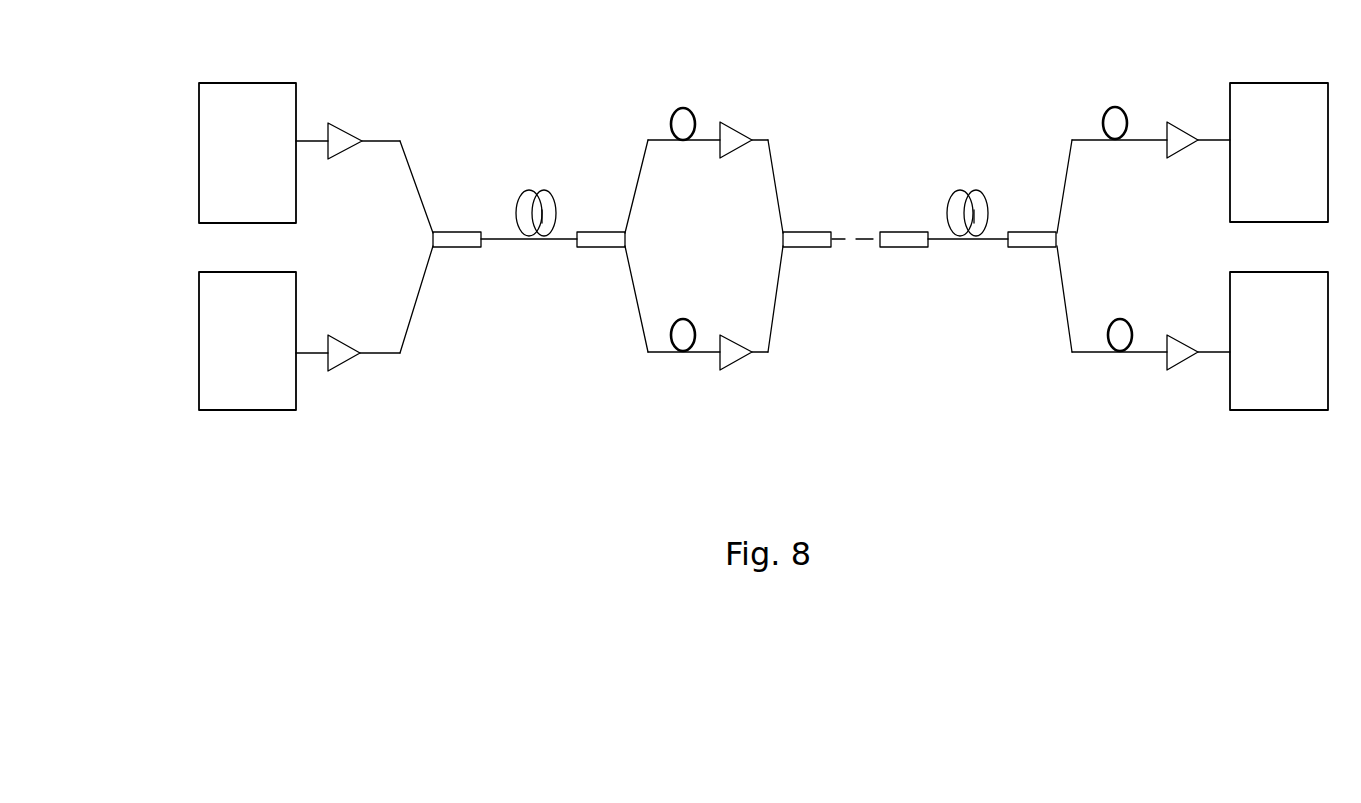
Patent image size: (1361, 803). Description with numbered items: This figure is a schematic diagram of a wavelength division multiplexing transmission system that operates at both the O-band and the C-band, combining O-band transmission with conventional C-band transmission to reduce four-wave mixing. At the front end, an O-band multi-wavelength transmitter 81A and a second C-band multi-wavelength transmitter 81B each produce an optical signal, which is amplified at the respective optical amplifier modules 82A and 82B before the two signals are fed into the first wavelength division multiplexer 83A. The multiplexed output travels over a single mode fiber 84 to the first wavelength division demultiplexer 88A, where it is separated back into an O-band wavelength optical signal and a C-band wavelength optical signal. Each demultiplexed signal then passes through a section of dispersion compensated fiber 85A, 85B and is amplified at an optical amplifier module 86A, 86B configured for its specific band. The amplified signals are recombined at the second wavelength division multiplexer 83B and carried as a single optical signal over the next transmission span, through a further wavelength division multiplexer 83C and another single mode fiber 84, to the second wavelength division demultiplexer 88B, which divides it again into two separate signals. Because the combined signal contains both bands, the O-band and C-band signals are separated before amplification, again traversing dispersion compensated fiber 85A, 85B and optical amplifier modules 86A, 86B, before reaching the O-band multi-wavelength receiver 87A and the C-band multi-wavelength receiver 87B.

The multi-wavelength transmitter at 1310 nm band 81A is at (238, 83).
The multi-wavelength transmitter at 1560 nm band 81B is at (240, 272).
The optical amplifier module 82A is at (343, 127).
The optical amplifier module 82B is at (342, 337).
The wavelength division multiplexer 83A is at (465, 230).
The wavelength division multiplexer 83B is at (800, 230).
The wavelength division multiplexer 83C is at (895, 230).
The single mode fiber 84 is at (543, 190).
The dispersion compensated fiber 85A is at (692, 110).
The dispersion compensated fiber 85B is at (692, 320).
The optical amplifier module 86A is at (738, 120).
The optical amplifier module 86B is at (732, 338).
The multi-wavelength receiver at 1310 nm band 87A is at (1290, 83).
The multi-wavelength receiver at 1560 nm band 87B is at (1282, 272).
The wavelength division demultiplexer 88A is at (610, 230).
The wavelength division demultiplexer 88B is at (1040, 230).